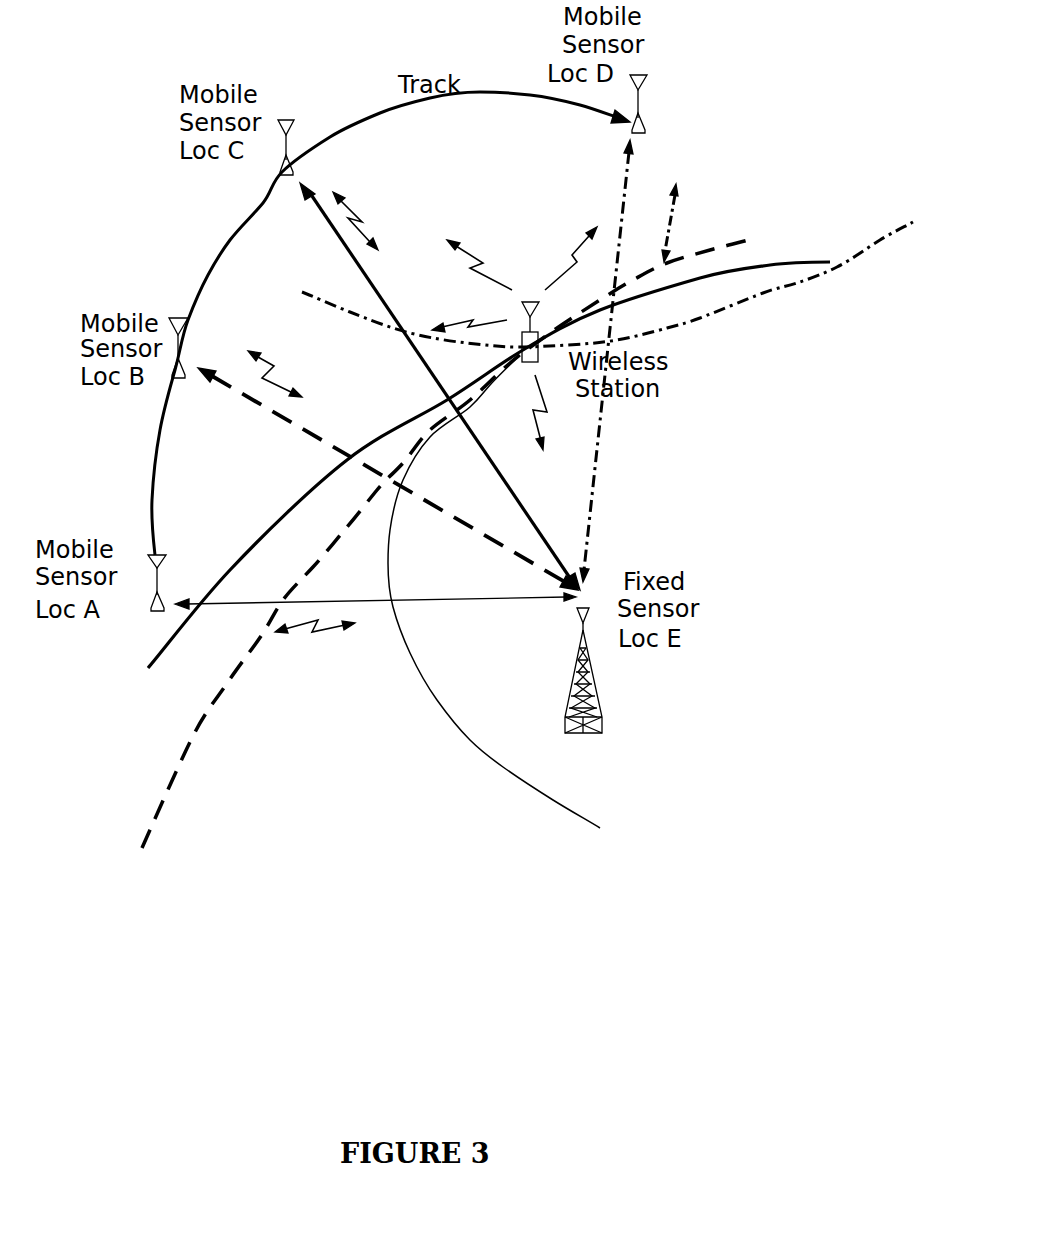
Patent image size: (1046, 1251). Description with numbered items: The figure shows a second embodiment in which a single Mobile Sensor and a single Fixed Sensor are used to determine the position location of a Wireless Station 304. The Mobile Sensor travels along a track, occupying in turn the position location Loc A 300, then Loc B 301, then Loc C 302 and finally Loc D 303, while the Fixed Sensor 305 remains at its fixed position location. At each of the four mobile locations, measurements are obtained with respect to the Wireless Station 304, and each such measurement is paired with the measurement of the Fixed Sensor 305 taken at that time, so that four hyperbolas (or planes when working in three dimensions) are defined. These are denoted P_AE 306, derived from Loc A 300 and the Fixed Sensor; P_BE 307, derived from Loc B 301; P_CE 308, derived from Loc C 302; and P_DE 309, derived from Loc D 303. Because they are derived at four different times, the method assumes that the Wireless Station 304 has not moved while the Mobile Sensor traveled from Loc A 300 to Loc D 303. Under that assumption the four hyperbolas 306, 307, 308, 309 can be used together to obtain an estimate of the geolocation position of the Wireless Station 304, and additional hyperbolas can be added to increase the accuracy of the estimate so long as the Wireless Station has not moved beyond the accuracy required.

The position location Loc A 300 is at (163, 600).
The position location Loc B 301 is at (183, 356).
The position location Loc C 302 is at (291, 120).
The position location Loc D 303 is at (645, 120).
The Wireless Station 304 is at (538, 335).
The Fixed Sensor 305 is at (605, 730).
The hyperbola P_AE 306 is at (450, 720).
The hyperbola P_BE 307 is at (200, 727).
The hyperbola P_CE 308 is at (152, 660).
The hyperbola P_DE 309 is at (795, 285).